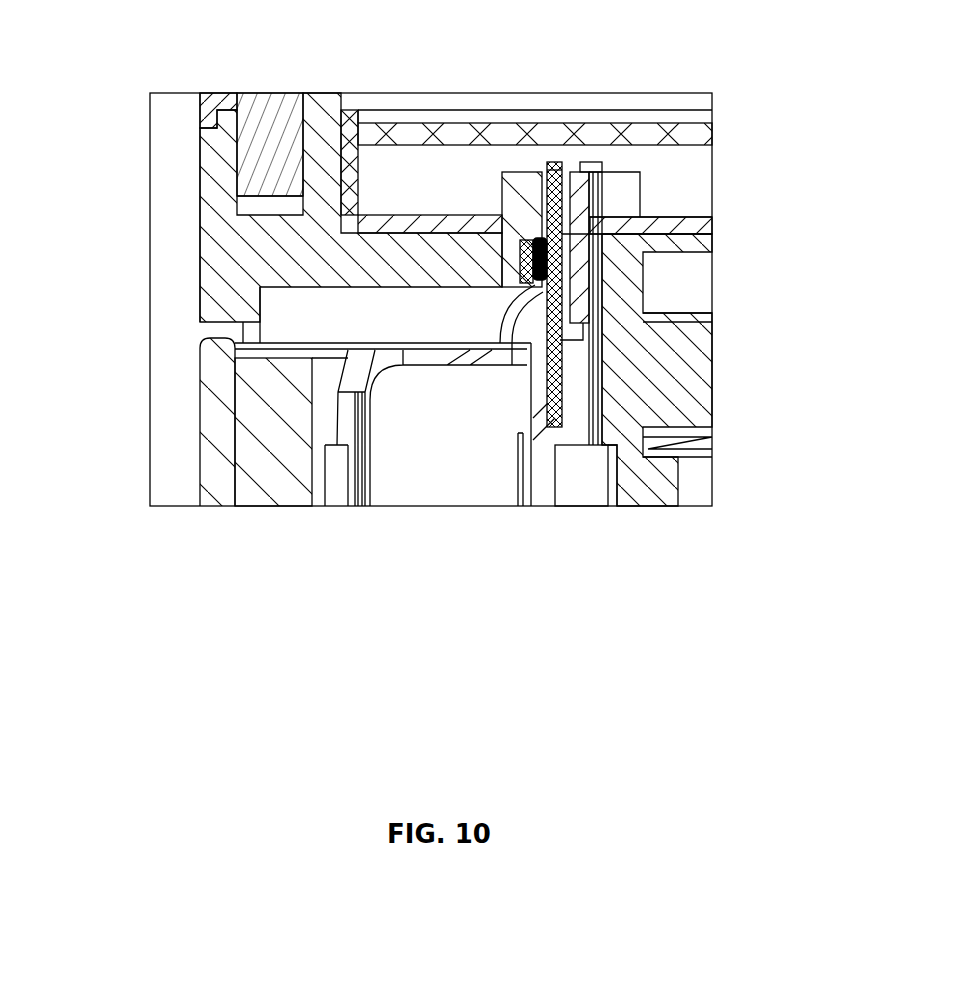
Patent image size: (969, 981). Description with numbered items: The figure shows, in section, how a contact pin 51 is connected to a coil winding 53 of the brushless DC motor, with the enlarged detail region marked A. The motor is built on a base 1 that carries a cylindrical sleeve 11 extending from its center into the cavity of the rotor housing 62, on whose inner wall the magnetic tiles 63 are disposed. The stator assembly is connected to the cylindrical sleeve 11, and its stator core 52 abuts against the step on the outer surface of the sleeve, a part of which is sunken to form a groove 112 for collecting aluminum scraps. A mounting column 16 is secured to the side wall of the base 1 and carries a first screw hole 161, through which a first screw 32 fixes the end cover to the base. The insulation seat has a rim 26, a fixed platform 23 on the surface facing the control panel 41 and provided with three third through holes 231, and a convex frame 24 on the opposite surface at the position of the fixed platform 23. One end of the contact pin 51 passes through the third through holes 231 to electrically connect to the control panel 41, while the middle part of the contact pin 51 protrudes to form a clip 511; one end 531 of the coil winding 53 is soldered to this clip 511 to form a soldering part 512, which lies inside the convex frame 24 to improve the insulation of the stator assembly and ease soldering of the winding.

The base 1 is at (237, 282).
The region A is at (150, 310).
The mounting column 16 is at (303, 108).
The first screw hole 161 is at (240, 202).
The first screw 32 is at (250, 96).
The rim 26 is at (345, 114).
The clip 511 is at (520, 178).
The soldering part 512 is at (548, 238).
The fixed platform 23 is at (558, 208).
The third through hole 231 is at (550, 163).
The control panel 41 is at (597, 163).
The convex frame 24 is at (646, 315).
The cylindrical sleeve 11 is at (645, 365).
The contact pin 51 is at (665, 460).
The stator core 52 is at (570, 483).
The groove 112 is at (612, 420).
The housing 62 is at (218, 375).
The magnetic tile 63 is at (268, 395).
The coil winding 53 is at (493, 458).
The end of coil winding 531 is at (530, 297).